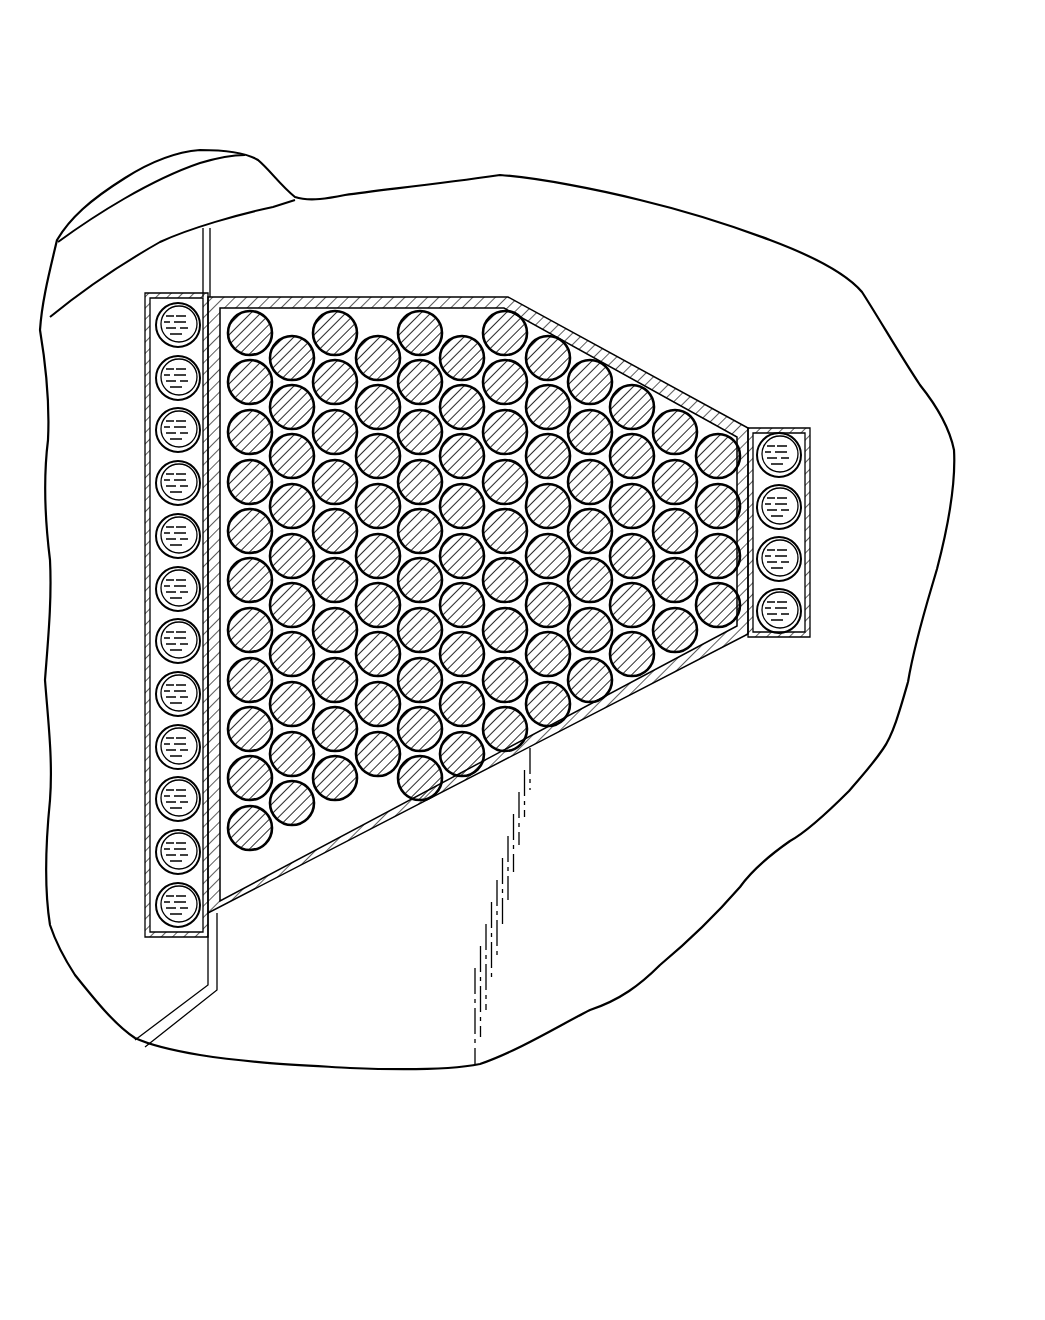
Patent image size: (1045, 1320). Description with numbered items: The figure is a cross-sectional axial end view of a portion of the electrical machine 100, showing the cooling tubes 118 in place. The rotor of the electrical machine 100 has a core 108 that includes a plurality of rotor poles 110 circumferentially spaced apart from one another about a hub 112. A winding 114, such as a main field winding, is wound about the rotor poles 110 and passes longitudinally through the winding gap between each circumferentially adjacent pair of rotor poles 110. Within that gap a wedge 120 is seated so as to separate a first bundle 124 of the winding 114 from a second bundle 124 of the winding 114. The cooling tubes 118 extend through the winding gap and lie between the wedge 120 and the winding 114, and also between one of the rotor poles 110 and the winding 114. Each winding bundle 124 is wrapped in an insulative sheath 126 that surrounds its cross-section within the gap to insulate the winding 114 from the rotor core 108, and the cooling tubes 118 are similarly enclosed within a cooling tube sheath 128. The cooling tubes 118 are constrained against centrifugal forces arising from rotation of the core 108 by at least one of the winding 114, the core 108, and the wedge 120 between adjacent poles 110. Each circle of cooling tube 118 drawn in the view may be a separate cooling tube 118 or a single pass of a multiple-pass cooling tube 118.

The electrical machine 100 is at (745, 137).
The core 108 is at (670, 869).
The rotor poles 110 is at (746, 295).
The hub 112 is at (502, 906).
The winding 114 is at (448, 330).
The cooling tubes 118 is at (780, 432).
The wedge 120 is at (104, 611).
The winding bundle 124 is at (484, 580).
The insulative sheath 126 is at (608, 358).
The cooling tube sheath 128 is at (790, 640).